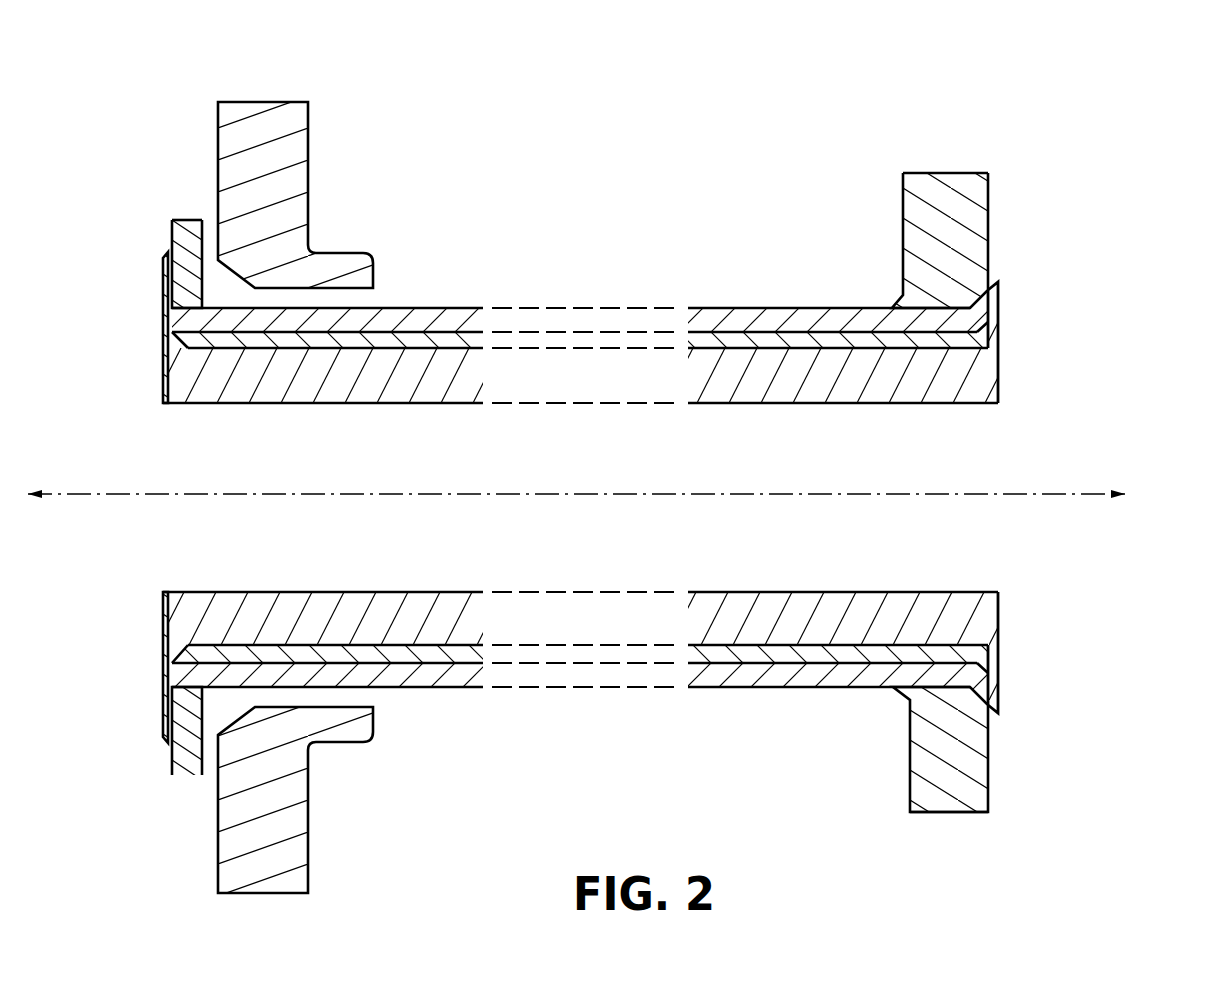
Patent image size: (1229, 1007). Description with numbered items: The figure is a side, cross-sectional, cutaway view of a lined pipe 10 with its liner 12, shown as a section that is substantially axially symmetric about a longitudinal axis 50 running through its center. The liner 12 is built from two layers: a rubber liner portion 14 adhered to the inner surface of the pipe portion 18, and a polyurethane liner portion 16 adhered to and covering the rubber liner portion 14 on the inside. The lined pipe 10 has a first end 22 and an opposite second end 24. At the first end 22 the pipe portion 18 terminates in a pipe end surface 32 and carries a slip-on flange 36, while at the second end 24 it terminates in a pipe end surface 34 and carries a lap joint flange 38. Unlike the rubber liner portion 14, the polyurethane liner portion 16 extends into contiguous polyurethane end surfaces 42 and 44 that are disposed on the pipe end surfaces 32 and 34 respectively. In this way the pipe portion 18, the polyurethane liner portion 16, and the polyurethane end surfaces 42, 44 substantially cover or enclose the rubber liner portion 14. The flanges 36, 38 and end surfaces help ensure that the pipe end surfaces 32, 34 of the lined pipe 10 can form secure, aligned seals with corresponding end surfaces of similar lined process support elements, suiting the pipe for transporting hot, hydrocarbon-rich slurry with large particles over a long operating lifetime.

The lined pipe 10 is at (1070, 99).
The liner 12 is at (345, 412).
The rubber liner portion 14 is at (380, 338).
The polyurethane liner portion 16 is at (445, 405).
The pipe portion 18 is at (428, 318).
The first end 22 is at (948, 162).
The second end 24 is at (181, 210).
The pipe end surface 32 is at (988, 232).
The pipe end surface 34 is at (171, 233).
The slip-on flange 36 is at (925, 170).
The lap joint flange 38 is at (276, 108).
The polyurethane end surface 42 is at (1000, 345).
The polyurethane end surface 44 is at (162, 355).
The longitudinal axis 50 is at (1068, 490).